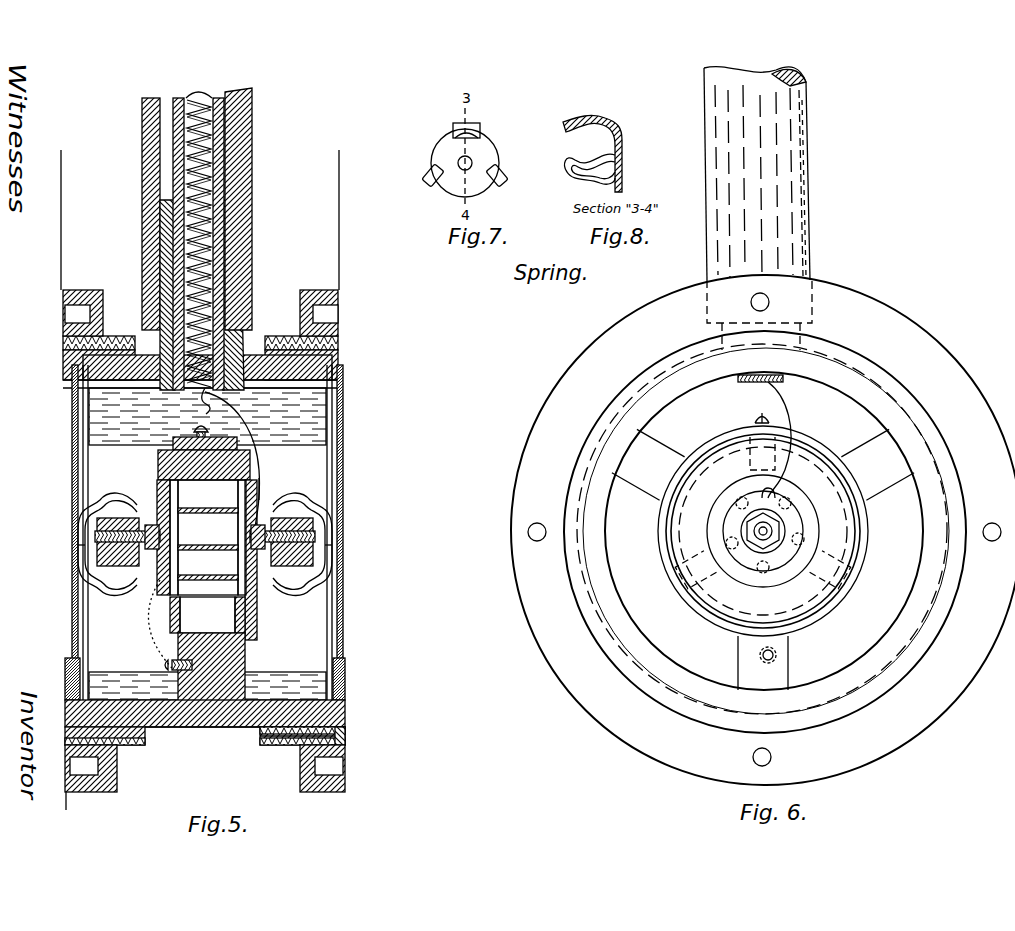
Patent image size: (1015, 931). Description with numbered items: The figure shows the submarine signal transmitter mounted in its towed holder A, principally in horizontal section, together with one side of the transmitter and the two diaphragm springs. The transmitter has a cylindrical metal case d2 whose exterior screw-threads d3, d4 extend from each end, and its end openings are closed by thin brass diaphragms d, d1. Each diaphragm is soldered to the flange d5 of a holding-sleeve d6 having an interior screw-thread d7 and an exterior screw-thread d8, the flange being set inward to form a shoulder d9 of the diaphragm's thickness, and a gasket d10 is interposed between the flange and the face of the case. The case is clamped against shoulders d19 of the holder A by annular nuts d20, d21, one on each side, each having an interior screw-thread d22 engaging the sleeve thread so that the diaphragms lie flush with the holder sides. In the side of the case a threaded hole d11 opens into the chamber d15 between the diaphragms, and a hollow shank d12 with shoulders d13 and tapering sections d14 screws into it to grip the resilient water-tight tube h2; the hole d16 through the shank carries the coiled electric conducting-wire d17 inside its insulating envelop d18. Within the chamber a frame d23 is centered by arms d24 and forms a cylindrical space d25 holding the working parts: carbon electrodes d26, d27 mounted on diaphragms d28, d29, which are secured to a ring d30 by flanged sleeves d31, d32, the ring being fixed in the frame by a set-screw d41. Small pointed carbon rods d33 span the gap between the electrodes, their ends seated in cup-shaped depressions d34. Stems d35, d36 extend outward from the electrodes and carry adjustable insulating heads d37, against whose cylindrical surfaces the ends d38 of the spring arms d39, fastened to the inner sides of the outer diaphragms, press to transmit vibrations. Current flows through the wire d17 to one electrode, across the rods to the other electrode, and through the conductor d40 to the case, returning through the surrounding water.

In FIG. 5, the diaphragm d is at (74, 438).
In FIG. 5, the diaphragm d1 is at (343, 446).
In FIG. 5, the cylindrical metal case d2 is at (230, 718).
In FIG. 5, the exterior screw-thread d3 is at (120, 738).
In FIG. 5, the exterior screw-thread d4 is at (302, 729).
In FIG. 5, the flange d5 is at (345, 712).
In FIG. 5, the holding-sleeve d6 is at (348, 722).
In FIG. 5, the interior screw-thread d7 is at (295, 723).
In FIG. 5, the exterior screw-thread d8 is at (318, 736).
In FIG. 5, the shoulder d9 is at (348, 716).
In FIG. 5, the gasket d10 is at (342, 688).
In FIG. 5, the threaded hole d11 is at (225, 392).
In FIG. 5, the hollow shank d12 is at (228, 296).
In FIG. 5, the shoulders d13 is at (248, 240).
In FIG. 5, the tapering sections d14 is at (238, 262).
In FIG. 5, the chamber d15 is at (296, 412).
In FIG. 5, the hole d16 is at (230, 215).
In FIG. 5, the electric conducting-wire d17 is at (215, 162).
In FIG. 5, the insulating envelop d18 is at (222, 112).
In FIG. 5, the shoulders d19 is at (98, 290).
In FIG. 5, the annular nut d20 is at (97, 772).
In FIG. 5, the annular nut d21 is at (332, 782).
In FIG. 5, the interior screw-thread d22 is at (347, 745).
In FIG. 5, the frame d23 is at (222, 656).
In FIG. 6, the frame d23 is at (710, 616).
In FIG. 6, the arms d24 is at (665, 457).
In FIG. 5, the cylindrical space d25 is at (220, 622).
In FIG. 5, the electrode d26 is at (150, 520).
In FIG. 5, the electrode d27 is at (249, 500).
In FIG. 5, the diaphragm d28 is at (160, 484).
In FIG. 5, the diaphragm d29 is at (254, 474).
In FIG. 5, the ring d30 is at (200, 438).
In FIG. 5, the flanged sleeve d31 is at (162, 454).
In FIG. 5, the flanged sleeve d32 is at (259, 478).
In FIG. 5, the rods d33 is at (208, 543).
In FIG. 5, the cup-shaped depressions d34 is at (208, 532).
In FIG. 5, the stem d35 is at (97, 527).
In FIG. 5, the stem d36 is at (330, 508).
In FIG. 5, the head d37 is at (112, 545).
In FIG. 5, the ends d38 is at (334, 470).
In FIG. 5, the spring arms d39 is at (82, 575).
In FIG. 5, the conductor d40 is at (155, 640).
In FIG. 5, the set-screw d41 is at (232, 468).
In FIG. 5, the rubber tube h2 is at (240, 180).
In FIG. 5, the holder A is at (120, 260).